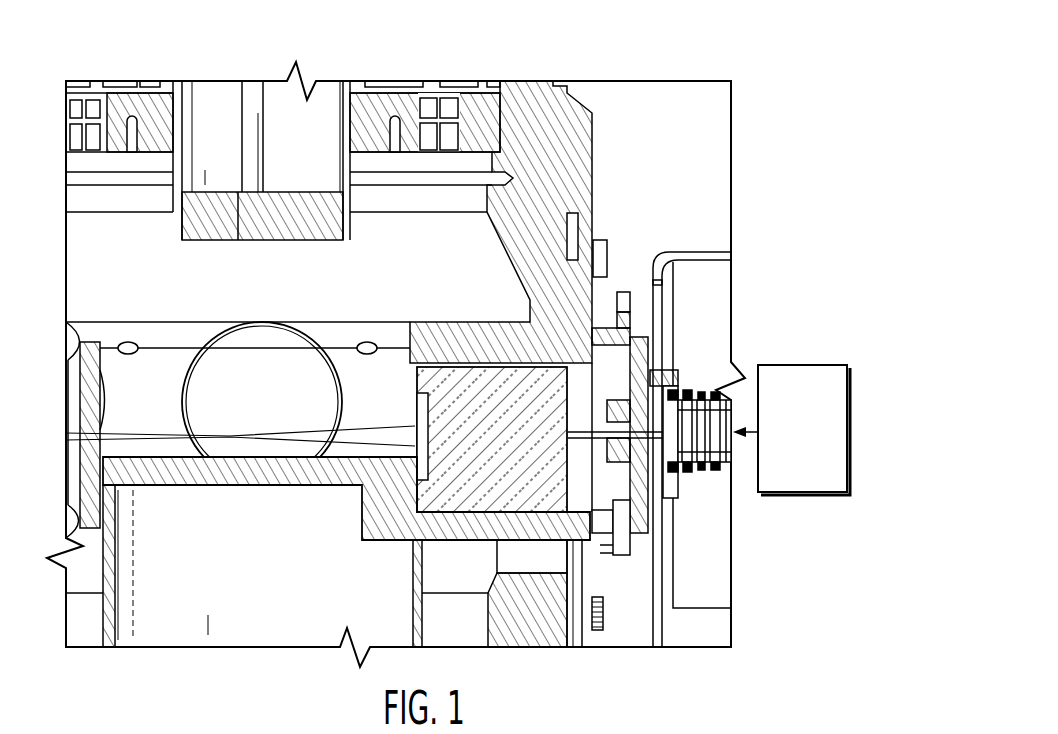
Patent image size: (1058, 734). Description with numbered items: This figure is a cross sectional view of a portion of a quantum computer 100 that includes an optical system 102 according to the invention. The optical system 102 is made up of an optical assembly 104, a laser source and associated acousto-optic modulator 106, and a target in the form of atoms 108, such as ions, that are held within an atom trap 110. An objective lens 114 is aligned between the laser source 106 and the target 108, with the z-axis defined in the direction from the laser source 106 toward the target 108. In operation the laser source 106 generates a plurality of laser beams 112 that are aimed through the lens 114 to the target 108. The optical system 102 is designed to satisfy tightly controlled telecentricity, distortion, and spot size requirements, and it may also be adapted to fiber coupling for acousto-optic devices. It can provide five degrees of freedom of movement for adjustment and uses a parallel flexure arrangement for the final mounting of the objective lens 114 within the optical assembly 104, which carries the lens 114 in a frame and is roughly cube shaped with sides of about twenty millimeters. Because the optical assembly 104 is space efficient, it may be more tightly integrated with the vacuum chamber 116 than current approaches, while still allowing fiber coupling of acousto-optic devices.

The quantum computer 100 is at (676, 98).
The optical system 102 is at (630, 256).
The optical assembly 104 is at (428, 383).
The laser source and associated acousto-optic modulator (AOM) 106 is at (811, 365).
The target atoms 108 is at (262, 440).
The atom trap 110 is at (220, 476).
The laser beams 112 is at (613, 558).
The objective lens 114 is at (416, 464).
The vacuum chamber 116 is at (463, 542).